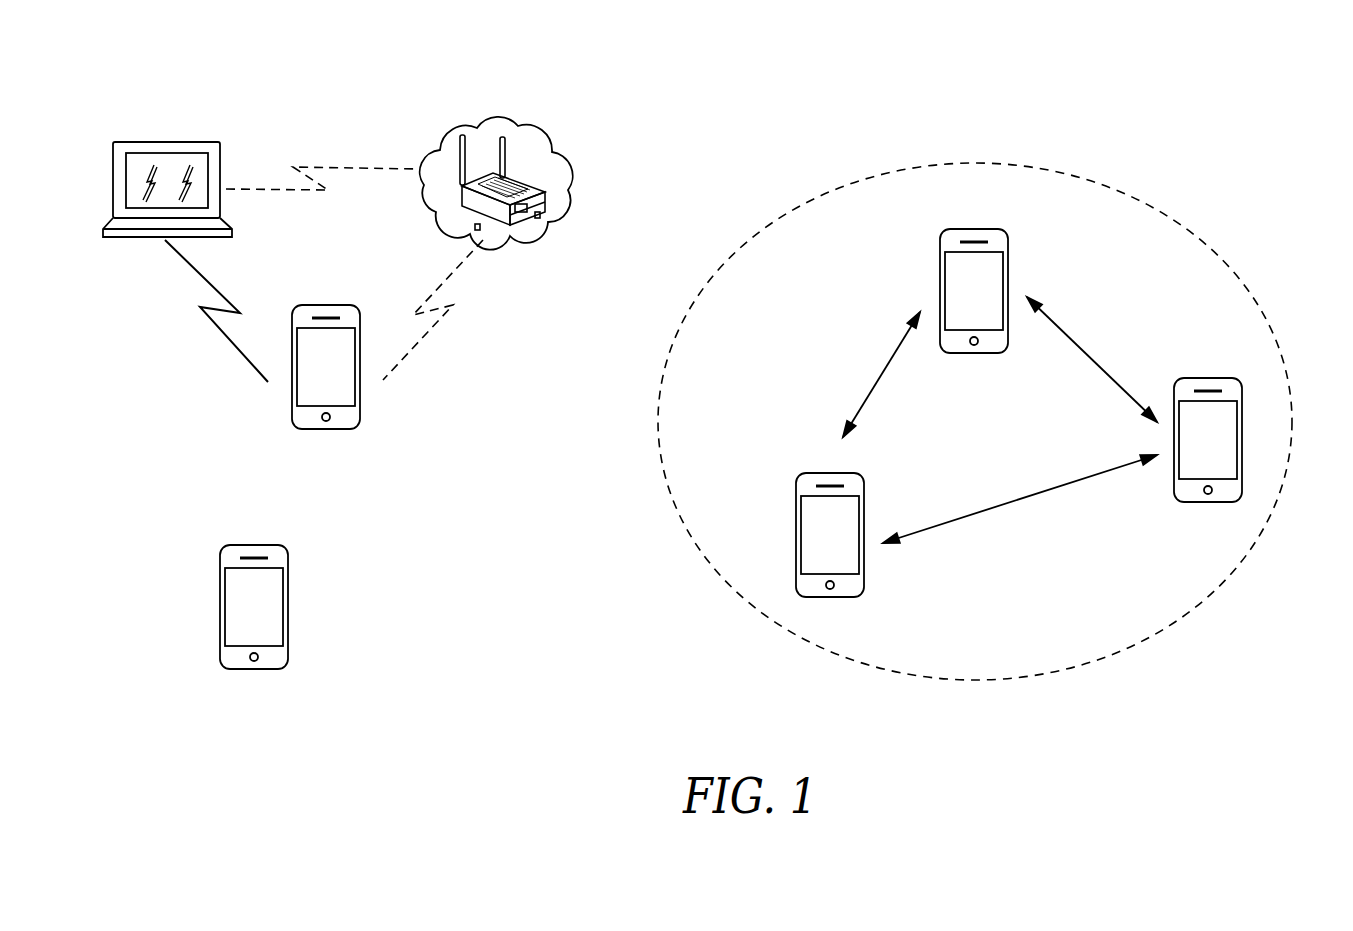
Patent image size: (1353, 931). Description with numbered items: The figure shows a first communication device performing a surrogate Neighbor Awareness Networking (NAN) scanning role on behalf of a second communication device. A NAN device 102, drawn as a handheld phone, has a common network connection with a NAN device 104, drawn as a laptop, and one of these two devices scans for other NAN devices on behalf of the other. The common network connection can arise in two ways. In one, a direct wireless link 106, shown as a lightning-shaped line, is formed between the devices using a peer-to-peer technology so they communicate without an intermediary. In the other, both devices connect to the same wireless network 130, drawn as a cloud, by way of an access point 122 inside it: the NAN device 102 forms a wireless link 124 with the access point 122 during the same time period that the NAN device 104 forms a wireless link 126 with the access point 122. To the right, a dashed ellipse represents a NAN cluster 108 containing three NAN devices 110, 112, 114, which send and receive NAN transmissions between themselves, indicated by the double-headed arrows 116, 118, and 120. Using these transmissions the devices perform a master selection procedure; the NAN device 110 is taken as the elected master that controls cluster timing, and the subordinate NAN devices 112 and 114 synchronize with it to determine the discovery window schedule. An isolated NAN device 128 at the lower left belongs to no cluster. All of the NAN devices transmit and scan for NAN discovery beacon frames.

The NAN device 102 is at (325, 431).
The NAN device 104 is at (168, 142).
The direct wireless link 106 is at (228, 339).
The NAN cluster 108 is at (1118, 190).
The NAN device 110 is at (983, 230).
The NAN device 112 is at (838, 474).
The NAN device 114 is at (1215, 379).
The NAN transmission 116 is at (882, 377).
The NAN transmission 118 is at (1088, 357).
The NAN transmission 120 is at (1018, 500).
The access point 122 is at (546, 200).
The wireless link 124 is at (438, 292).
The wireless link 126 is at (370, 167).
The isolated NAN device 128 is at (253, 671).
The wireless network 130 is at (557, 150).